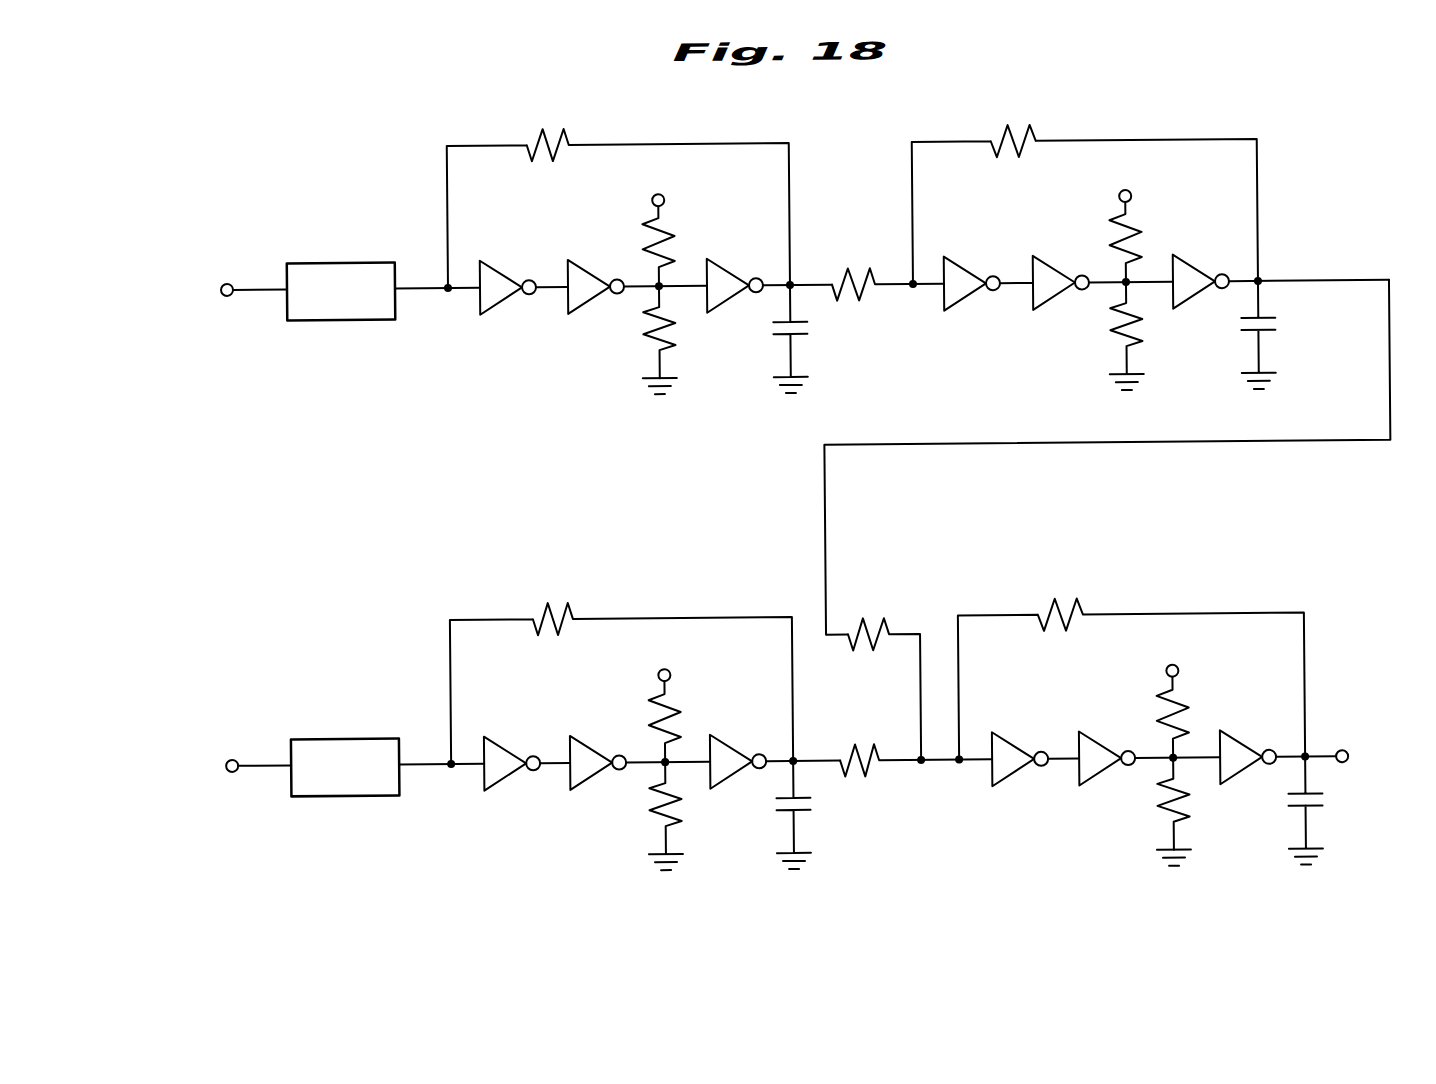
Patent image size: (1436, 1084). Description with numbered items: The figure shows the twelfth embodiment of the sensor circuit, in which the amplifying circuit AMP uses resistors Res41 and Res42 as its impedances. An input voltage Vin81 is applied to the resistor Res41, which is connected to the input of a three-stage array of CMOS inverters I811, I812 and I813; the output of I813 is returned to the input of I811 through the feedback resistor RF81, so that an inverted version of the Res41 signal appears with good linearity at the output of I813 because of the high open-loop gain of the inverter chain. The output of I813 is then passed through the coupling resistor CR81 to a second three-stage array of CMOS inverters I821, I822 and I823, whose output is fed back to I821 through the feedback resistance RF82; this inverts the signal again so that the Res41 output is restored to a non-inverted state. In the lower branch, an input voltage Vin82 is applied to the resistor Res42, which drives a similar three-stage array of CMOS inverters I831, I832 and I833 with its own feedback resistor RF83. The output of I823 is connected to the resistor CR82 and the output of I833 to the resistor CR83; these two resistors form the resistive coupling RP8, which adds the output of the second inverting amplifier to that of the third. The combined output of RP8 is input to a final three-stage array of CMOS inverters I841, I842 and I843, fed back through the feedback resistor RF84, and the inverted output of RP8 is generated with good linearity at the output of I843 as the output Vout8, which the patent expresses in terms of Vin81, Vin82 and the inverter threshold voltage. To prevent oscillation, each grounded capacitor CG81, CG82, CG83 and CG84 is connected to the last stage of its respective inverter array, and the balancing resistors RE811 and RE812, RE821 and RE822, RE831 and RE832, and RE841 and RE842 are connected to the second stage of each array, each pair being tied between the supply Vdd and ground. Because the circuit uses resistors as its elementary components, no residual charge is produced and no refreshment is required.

The input voltage Vin81 is at (215, 293).
The input voltage Vin82 is at (218, 769).
The output Vout8 is at (1379, 754).
The resistor Res41 is at (383, 291).
The resistor Res42 is at (387, 767).
The feedback resistor RF81 is at (618, 192).
The feedback resistance RF82 is at (1084, 188).
The feedback resistor RF83 is at (621, 667).
The feedback resistor RF84 is at (1131, 663).
The CMOS inverter I811 is at (523, 274).
The CMOS inverter I812 is at (637, 273).
The CMOS inverter I813 is at (766, 302).
The CMOS inverter I821 is at (987, 270).
The CMOS inverter I822 is at (1103, 269).
The CMOS inverter I823 is at (1279, 298).
The CMOS inverter I831 is at (525, 750).
The CMOS inverter I832 is at (640, 749).
The CMOS inverter I833 is at (773, 777).
The CMOS inverter I841 is at (1036, 744).
The CMOS inverter I842 is at (1150, 742).
The CMOS inverter I843 is at (1275, 771).
The balancing resistor RE811 is at (699, 245).
The balancing resistor RE812 is at (622, 340).
The balancing resistor RE821 is at (1168, 241).
The balancing resistor RE822 is at (1088, 336).
The balancing resistor RE831 is at (703, 721).
The balancing resistor RE832 is at (627, 816).
The balancing resistor RE841 is at (1212, 717).
The balancing resistor RE842 is at (1135, 812).
The coupling resistor CR81 is at (883, 268).
The resistor CR82 is at (880, 673).
The resistor CR83 is at (910, 743).
The grounded capacitor CG81 is at (831, 338).
The grounded capacitor CG82 is at (1299, 334).
The grounded capacitor CG83 is at (834, 814).
The grounded capacitor CG84 is at (1345, 810).
The power supply terminal Vdd is at (914, 421).
The amplifying circuit AMP is at (1289, 137).
The resistive coupling RP8 is at (930, 830).